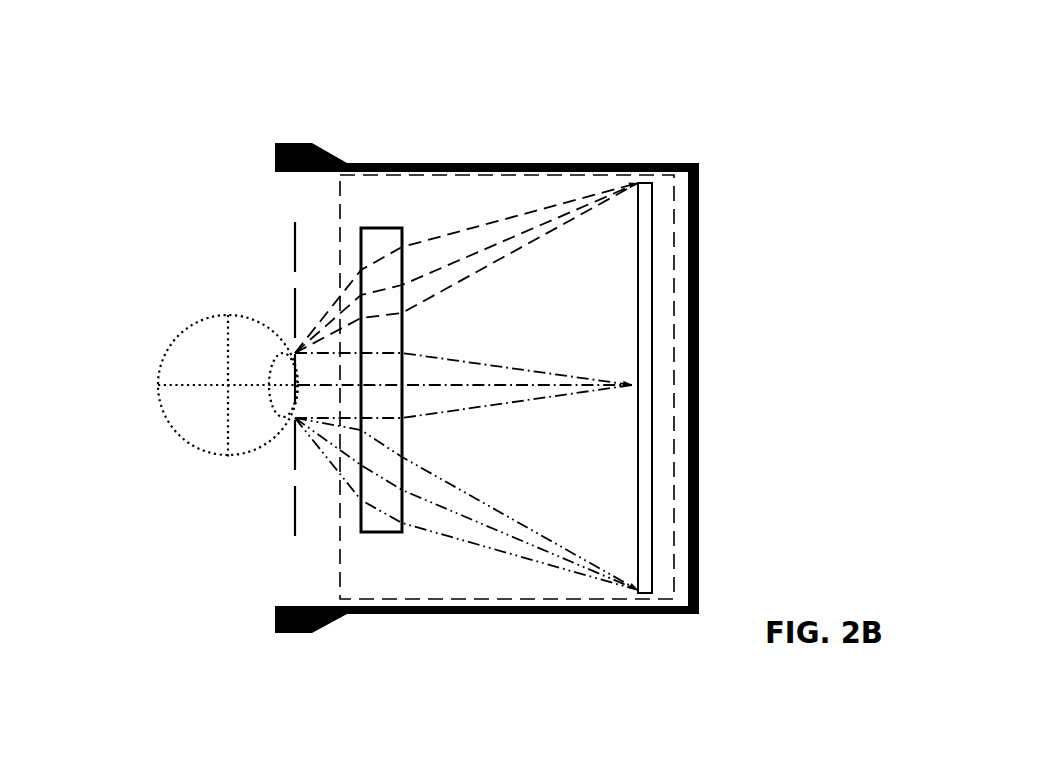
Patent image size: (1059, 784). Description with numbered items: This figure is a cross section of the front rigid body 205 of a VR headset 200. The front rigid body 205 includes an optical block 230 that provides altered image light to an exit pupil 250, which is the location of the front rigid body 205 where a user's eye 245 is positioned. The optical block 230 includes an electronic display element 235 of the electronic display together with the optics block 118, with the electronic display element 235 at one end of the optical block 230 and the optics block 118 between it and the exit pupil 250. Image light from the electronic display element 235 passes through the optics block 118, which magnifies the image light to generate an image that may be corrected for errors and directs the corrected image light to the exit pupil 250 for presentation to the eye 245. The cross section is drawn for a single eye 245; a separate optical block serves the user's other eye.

The VR headset 200 is at (44, 42).
The front rigid body 205 is at (666, 150).
The optics block 118 is at (348, 234).
The optical block 230 is at (325, 506).
The electronic display element 235 is at (667, 295).
The eye 245 is at (185, 316).
The exit pupil 250 is at (276, 536).